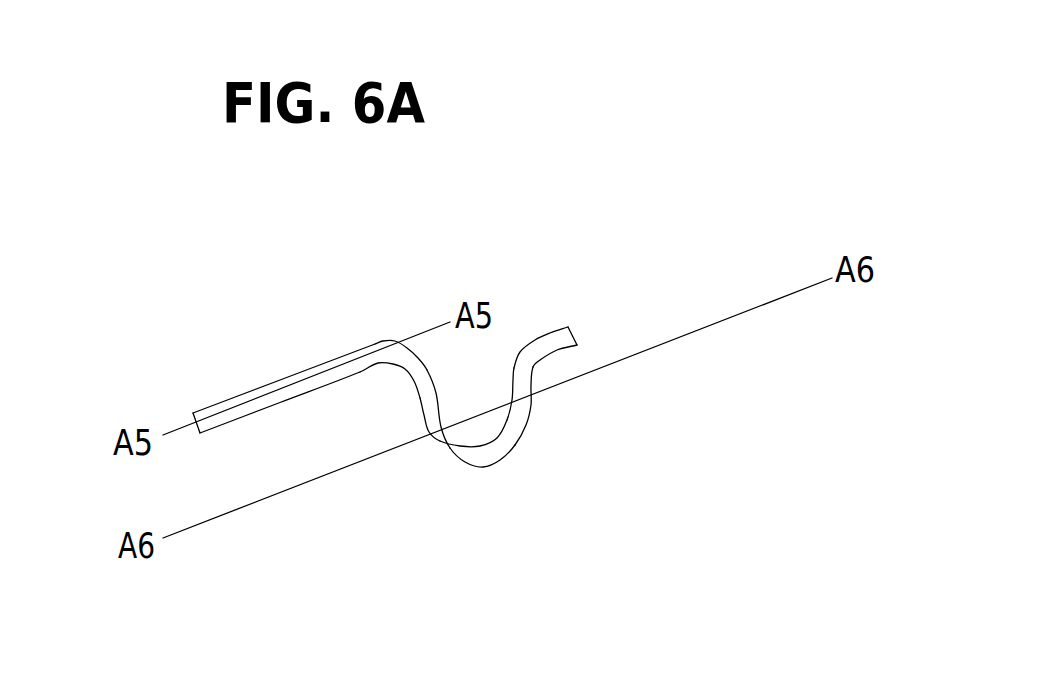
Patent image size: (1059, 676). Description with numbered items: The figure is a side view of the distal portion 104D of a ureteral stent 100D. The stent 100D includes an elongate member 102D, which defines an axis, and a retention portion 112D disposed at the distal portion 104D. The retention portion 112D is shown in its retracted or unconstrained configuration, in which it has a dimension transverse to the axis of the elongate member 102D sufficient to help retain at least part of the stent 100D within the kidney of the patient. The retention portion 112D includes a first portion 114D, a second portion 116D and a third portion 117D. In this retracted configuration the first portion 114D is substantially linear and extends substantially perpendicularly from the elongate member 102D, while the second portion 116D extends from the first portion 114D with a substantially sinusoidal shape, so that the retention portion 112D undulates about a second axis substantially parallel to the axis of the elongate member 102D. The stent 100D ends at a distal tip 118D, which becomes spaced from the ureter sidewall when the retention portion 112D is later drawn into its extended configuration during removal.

The ureteral stent 100D is at (432, 441).
The elongate member 102D is at (255, 386).
The distal portion 104D is at (474, 392).
The retention portion 112D is at (500, 463).
The first portion 114D is at (423, 414).
The second portion 116D is at (511, 362).
The third portion 117D is at (338, 350).
The distal tip 118D is at (577, 334).